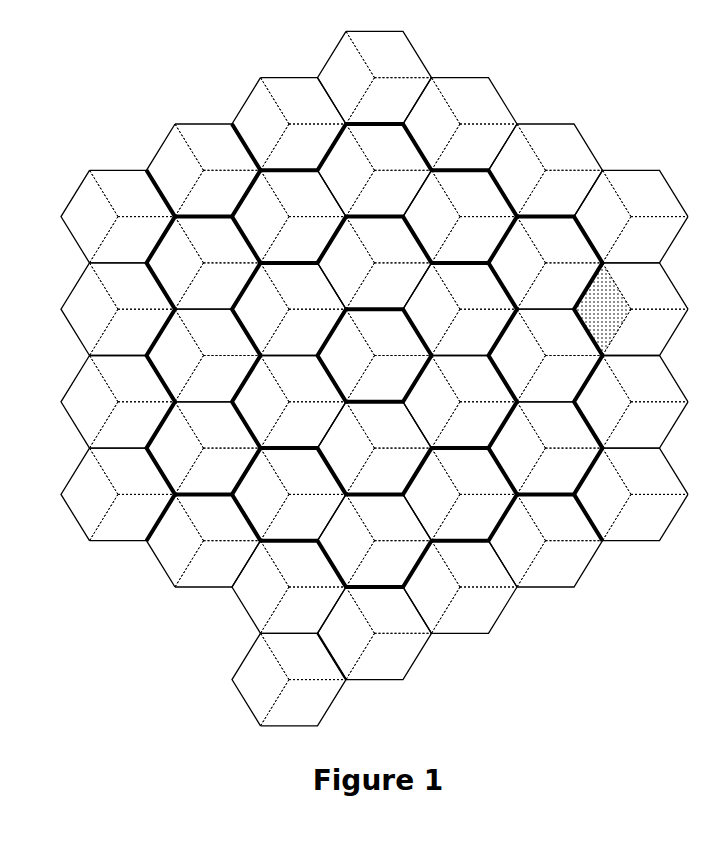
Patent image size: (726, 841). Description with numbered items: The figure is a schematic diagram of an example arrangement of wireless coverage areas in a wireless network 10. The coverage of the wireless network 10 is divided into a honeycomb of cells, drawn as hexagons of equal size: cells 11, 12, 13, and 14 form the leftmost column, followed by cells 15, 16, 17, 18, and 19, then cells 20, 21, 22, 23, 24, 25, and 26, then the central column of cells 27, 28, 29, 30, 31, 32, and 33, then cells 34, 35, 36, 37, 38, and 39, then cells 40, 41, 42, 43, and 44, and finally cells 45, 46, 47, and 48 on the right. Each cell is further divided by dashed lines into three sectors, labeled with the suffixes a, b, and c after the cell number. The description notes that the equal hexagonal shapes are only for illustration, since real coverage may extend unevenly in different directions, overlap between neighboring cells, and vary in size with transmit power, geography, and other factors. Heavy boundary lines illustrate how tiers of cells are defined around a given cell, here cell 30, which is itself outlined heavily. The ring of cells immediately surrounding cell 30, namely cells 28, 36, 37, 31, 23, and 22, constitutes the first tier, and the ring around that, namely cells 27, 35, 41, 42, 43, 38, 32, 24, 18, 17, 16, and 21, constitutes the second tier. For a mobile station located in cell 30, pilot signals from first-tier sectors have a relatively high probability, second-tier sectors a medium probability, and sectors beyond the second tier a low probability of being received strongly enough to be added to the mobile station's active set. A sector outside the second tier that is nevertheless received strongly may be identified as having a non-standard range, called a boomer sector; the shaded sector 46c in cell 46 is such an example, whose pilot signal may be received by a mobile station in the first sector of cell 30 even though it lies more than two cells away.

The wireless network 10 is at (374, 390).
The cell 11 is at (118, 216).
The cell 12 is at (118, 309).
The cell 13 is at (118, 402).
The cell 14 is at (118, 494).
The cell 15 is at (204, 170).
The cell 16 is at (204, 263).
The cell 17 is at (204, 355).
The cell 18 is at (204, 448).
The cell 19 is at (204, 540).
The cell 20 is at (289, 124).
The cell 21 is at (289, 216).
The cell 22 is at (289, 309).
The cell 23 is at (289, 402).
The cell 24 is at (289, 494).
The cell 25 is at (289, 587).
The cell 26 is at (289, 679).
The cell 27 is at (375, 77).
The cell 28 is at (375, 170).
The cell 29 is at (375, 263).
The given cell 30 is at (375, 355).
The cell 31 is at (375, 448).
The cell 32 is at (375, 540).
The cell 33 is at (375, 633).
The cell 34 is at (460, 124).
The cell 35 is at (460, 216).
The cell 36 is at (460, 309).
The cell 37 is at (460, 402).
The cell 38 is at (460, 494).
The cell 39 is at (460, 587).
The cell 40 is at (546, 170).
The cell 41 is at (546, 263).
The cell 42 is at (546, 355).
The cell 43 is at (546, 448).
The cell 44 is at (546, 540).
The cell 45 is at (631, 216).
The cell 46 is at (631, 309).
The cell 47 is at (631, 402).
The cell 48 is at (631, 494).
The boomer sector 46c is at (602, 309).